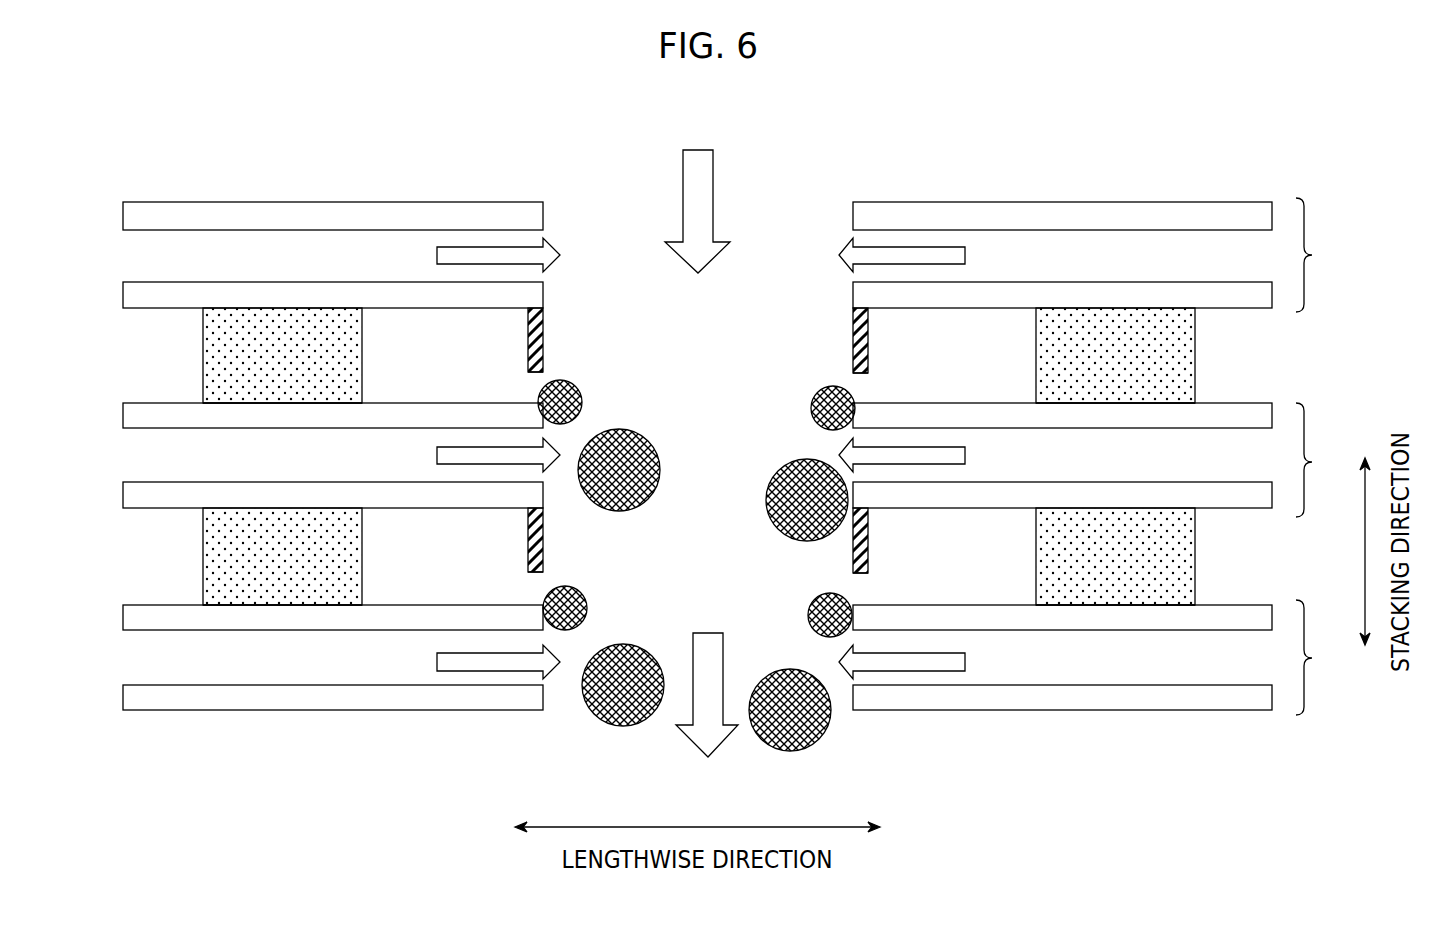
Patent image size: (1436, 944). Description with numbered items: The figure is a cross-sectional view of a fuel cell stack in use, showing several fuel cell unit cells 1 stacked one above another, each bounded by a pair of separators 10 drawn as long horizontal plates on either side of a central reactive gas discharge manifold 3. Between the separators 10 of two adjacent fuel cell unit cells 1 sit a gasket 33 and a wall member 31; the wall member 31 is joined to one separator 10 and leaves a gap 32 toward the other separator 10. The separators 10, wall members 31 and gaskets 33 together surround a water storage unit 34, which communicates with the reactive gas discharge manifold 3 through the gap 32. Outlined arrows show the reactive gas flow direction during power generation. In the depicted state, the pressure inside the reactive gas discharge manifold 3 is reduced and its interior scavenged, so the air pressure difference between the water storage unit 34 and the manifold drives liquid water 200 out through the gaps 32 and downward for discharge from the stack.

The fuel cell unit cell 1 is at (1320, 456).
The reactive gas discharge manifold 3 is at (628, 220).
The separator 10 is at (140, 220).
The wall member 31 is at (543, 344).
The gap 32 is at (533, 380).
The gasket 33 is at (232, 341).
The water storage unit 34 is at (417, 389).
The liquid water 200 is at (580, 398).